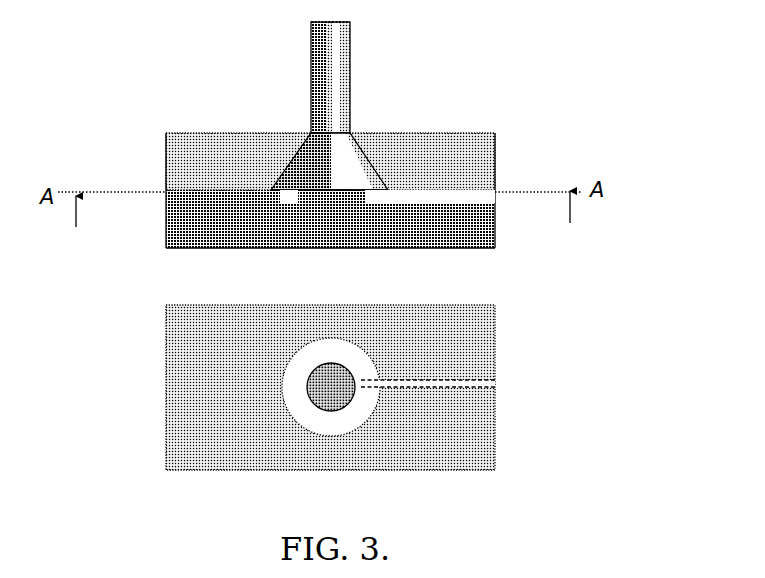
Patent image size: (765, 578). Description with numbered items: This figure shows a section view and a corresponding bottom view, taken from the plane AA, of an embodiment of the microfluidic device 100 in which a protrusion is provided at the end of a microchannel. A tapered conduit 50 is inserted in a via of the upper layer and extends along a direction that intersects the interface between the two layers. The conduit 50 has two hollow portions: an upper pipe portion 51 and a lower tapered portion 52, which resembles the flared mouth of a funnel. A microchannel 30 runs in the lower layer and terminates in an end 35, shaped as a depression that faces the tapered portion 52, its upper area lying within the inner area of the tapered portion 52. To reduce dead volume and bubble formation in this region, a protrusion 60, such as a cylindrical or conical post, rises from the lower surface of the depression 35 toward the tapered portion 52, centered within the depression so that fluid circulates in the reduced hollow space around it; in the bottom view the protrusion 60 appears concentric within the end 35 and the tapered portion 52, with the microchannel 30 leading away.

The device 100 is at (513, 284).
The tapered conduit 50 is at (363, 113).
The pipe portion 51 is at (350, 42).
The tapered portion 52 is at (363, 163).
The protrusion 60 is at (328, 191).
The microchannel 30 is at (433, 197).
The end of microchannel 35 is at (282, 205).